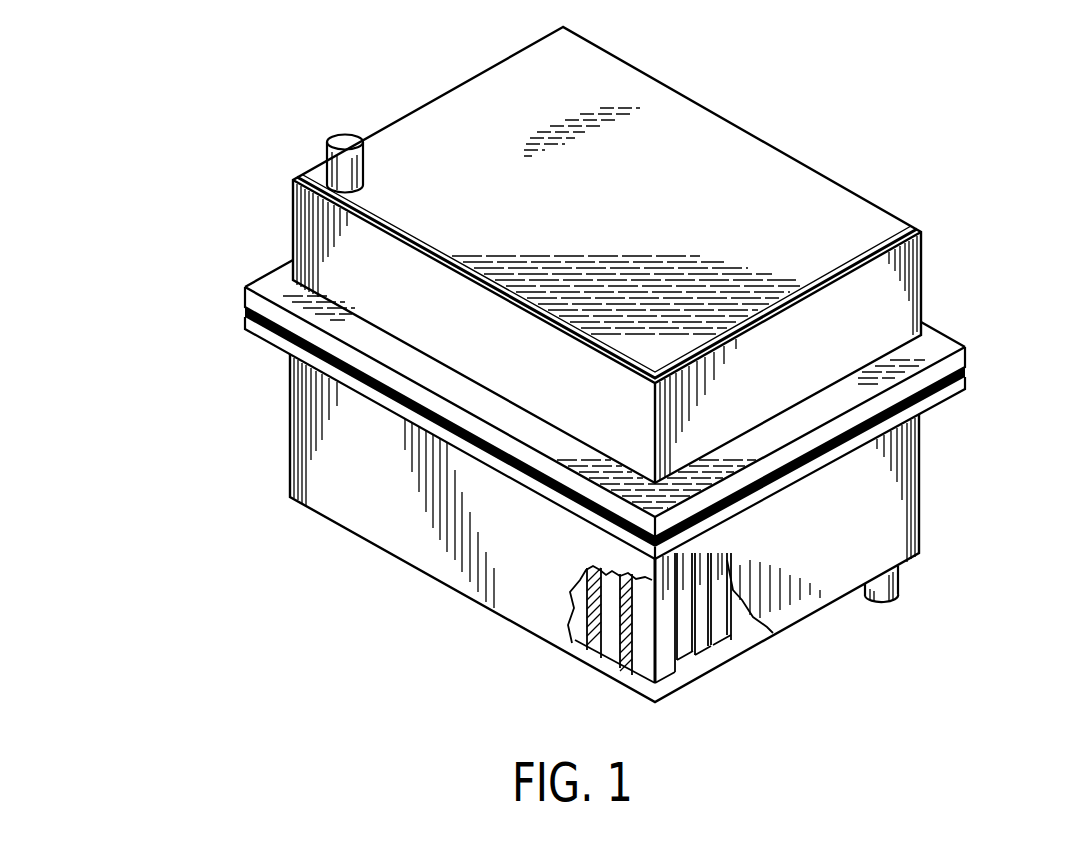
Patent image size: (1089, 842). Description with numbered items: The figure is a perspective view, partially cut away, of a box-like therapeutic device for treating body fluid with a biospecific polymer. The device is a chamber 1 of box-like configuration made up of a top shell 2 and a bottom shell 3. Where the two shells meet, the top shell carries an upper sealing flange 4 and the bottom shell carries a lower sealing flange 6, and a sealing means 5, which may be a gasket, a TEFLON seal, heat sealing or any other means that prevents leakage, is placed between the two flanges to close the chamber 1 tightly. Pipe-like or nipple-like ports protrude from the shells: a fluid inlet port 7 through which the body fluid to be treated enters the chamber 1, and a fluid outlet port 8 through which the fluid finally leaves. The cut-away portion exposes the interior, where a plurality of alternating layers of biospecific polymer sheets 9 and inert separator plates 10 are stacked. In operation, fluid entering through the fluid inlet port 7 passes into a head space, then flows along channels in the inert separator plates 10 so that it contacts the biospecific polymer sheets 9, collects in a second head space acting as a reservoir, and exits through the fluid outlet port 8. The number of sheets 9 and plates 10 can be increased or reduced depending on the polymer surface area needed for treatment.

The chamber 1 is at (678, 86).
The top shell 2 is at (442, 127).
The bottom shell 3 is at (353, 505).
The upper sealing flange 4 is at (952, 362).
The sealing means 5 is at (245, 310).
The lower sealing flange 6 is at (947, 388).
The fluid inlet port 7 is at (887, 602).
The fluid outlet port 8 is at (338, 143).
The biospecific polymer sheet 9 is at (626, 662).
The inert separator plate 10 is at (660, 667).